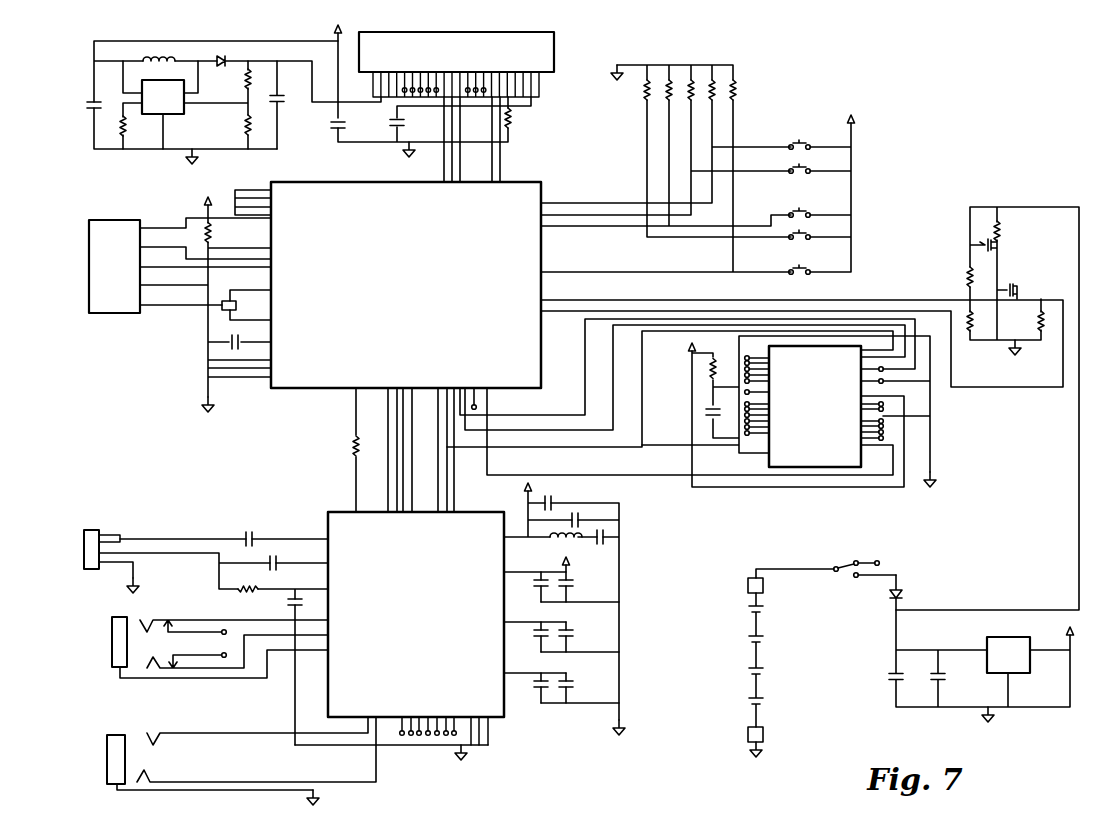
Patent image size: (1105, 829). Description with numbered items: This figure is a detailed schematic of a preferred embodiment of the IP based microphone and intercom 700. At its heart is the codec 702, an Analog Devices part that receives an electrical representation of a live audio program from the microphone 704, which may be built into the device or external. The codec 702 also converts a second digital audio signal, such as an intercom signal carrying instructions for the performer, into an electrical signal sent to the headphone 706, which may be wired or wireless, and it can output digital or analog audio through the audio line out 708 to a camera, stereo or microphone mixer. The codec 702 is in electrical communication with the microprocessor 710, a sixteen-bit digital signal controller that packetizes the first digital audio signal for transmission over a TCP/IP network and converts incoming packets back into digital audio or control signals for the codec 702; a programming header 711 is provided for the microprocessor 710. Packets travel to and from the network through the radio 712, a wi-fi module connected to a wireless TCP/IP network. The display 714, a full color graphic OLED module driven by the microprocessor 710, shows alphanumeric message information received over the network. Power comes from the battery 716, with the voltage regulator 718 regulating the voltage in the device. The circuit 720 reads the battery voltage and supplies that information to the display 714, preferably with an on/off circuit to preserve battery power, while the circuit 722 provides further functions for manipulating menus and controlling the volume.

The IP based microphone and intercom 700 is at (961, 98).
The codec 702 is at (510, 712).
The microphone 704 is at (84, 550).
The headphone 706 is at (112, 643).
The audio line out 708 is at (107, 749).
The microprocessor 710 is at (323, 390).
The programming header 711 is at (89, 288).
The radio 712 is at (865, 460).
The display 714 is at (556, 62).
The battery 716 is at (762, 687).
The voltage regulator 718 is at (1027, 710).
The circuit for reading battery voltage 720 is at (969, 220).
The circuit for menu and volume control 722 is at (851, 158).